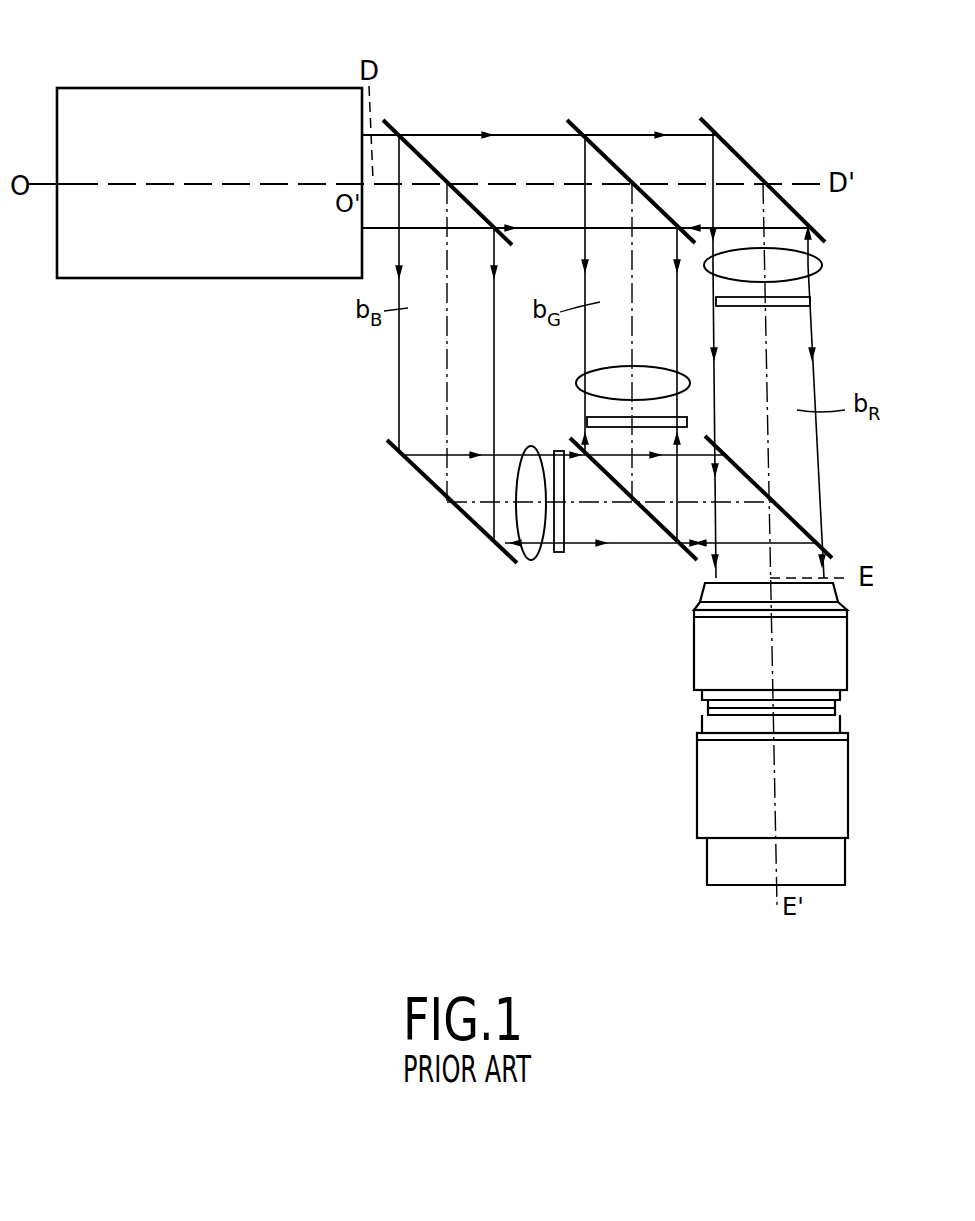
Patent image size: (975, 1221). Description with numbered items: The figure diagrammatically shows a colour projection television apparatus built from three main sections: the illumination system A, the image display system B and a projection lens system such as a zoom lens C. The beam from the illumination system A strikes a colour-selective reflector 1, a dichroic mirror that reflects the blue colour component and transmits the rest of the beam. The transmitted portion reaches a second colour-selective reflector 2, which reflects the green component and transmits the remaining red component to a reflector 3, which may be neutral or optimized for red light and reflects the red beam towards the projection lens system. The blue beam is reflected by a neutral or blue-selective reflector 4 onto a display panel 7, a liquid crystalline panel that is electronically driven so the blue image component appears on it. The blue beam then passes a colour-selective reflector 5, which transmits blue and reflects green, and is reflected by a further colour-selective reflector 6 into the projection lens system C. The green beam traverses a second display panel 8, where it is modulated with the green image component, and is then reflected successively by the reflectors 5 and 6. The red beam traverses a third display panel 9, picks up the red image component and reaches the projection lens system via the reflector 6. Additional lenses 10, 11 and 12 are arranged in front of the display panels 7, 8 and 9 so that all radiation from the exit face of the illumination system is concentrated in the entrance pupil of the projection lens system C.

The colour-selective reflector 1 is at (414, 140).
The second colour-selective reflector 2 is at (622, 146).
The reflector 3 is at (738, 150).
The reflector 4 is at (425, 480).
The colour-selective reflector 5 is at (668, 530).
The further colour-selective reflector 6 is at (800, 530).
The display panel 7 is at (560, 556).
The second display panel 8 is at (590, 420).
The third display panel 9 is at (815, 300).
The additional lens 10 is at (531, 562).
The additional lens 11 is at (592, 378).
The additional lens 12 is at (822, 263).
The illumination system A is at (209, 168).
The image display system B is at (596, 112).
The projection lens system C is at (862, 732).